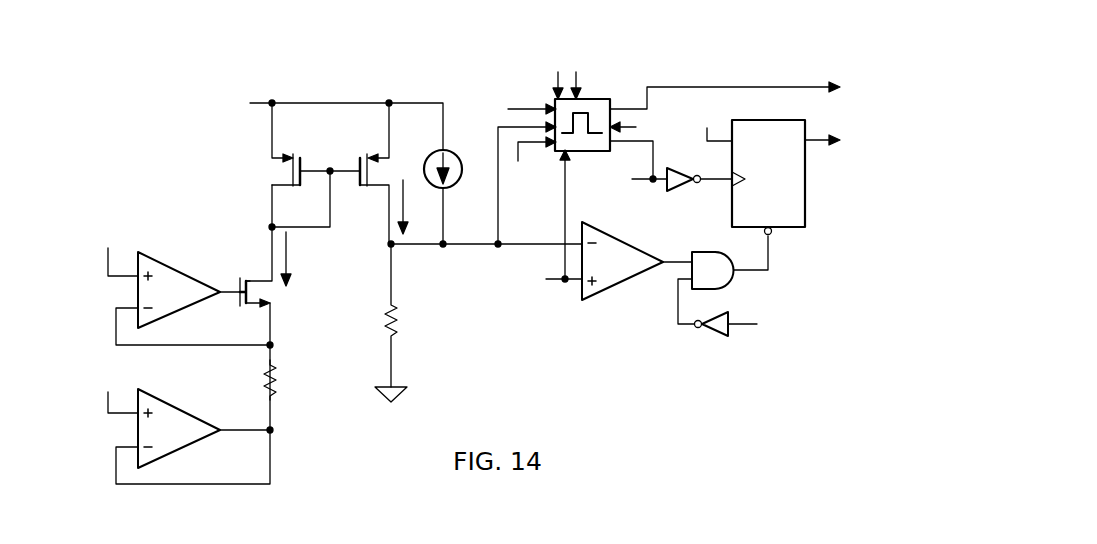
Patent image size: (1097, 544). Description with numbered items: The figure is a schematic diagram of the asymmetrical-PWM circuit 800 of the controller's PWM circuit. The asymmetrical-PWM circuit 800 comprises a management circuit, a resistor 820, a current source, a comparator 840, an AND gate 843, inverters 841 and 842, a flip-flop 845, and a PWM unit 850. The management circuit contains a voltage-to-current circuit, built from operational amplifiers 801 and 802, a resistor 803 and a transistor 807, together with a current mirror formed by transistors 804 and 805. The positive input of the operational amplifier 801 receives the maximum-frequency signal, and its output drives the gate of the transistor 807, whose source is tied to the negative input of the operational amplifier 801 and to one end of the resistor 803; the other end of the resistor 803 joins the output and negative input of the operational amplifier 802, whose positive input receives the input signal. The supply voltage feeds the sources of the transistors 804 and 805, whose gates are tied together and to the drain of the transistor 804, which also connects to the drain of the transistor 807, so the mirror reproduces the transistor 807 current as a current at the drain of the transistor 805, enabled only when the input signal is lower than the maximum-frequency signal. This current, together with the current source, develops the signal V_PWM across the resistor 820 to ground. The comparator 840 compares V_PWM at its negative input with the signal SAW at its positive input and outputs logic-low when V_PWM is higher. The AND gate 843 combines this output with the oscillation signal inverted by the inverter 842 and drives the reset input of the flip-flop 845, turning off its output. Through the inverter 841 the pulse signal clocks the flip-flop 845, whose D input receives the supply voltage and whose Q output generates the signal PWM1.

The asymmetrical-PWM circuit 800 is at (762, 41).
The operational amplifier 801 is at (179, 284).
The operational amplifier 802 is at (179, 423).
The resistor 803 is at (293, 380).
The transistor 804 is at (301, 144).
The transistor 805 is at (359, 173).
The transistor 807 is at (245, 280).
The resistor 820 is at (408, 323).
The comparator 840 is at (622, 255).
The inverter 841 is at (686, 168).
The inverter 842 is at (705, 335).
The AND gate 843 is at (713, 258).
The flip-flop 845 is at (768, 165).
The PWM unit 850 is at (590, 113).